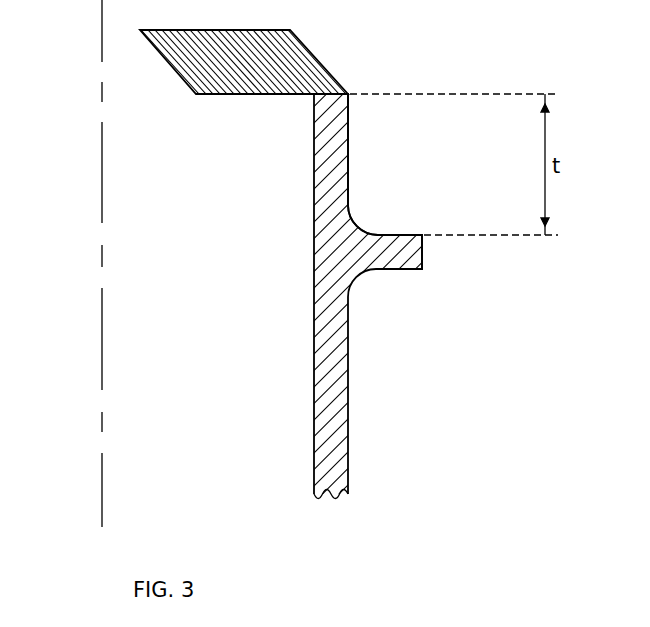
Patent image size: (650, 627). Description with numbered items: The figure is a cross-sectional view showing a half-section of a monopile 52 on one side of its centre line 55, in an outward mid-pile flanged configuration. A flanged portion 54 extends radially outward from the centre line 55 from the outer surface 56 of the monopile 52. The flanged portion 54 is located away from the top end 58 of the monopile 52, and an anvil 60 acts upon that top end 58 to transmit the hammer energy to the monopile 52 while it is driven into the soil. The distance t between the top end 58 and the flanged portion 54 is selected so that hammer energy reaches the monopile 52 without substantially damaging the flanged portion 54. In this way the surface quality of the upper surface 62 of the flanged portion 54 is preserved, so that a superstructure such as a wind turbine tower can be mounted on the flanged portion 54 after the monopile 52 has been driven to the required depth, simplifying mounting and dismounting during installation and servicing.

The monopile 52 is at (349, 397).
The flanged portion 54 is at (423, 256).
The centre line 55 is at (101, 142).
The outer surface 56 is at (349, 178).
The top end 58 is at (350, 93).
The anvil 60 is at (300, 63).
The upper surface 62 is at (398, 235).